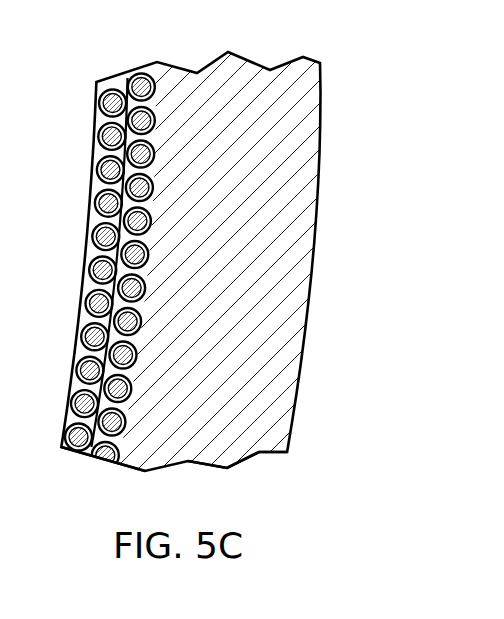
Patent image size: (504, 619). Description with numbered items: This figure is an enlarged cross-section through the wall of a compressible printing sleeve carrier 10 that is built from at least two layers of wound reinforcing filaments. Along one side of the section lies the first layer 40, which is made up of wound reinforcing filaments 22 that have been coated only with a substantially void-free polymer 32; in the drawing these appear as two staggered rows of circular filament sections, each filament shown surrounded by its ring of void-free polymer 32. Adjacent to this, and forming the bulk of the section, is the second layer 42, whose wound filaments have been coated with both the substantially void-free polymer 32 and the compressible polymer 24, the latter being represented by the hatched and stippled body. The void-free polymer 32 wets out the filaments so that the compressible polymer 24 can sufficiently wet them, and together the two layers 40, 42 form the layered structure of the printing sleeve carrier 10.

The printing sleeve carrier 10 is at (252, 260).
The reinforcing filaments 22 is at (87, 342).
The compressible polymer 24 is at (311, 272).
The substantially void-free polymer 32 is at (122, 281).
The first layer 40 is at (70, 458).
The second layer 42 is at (247, 472).